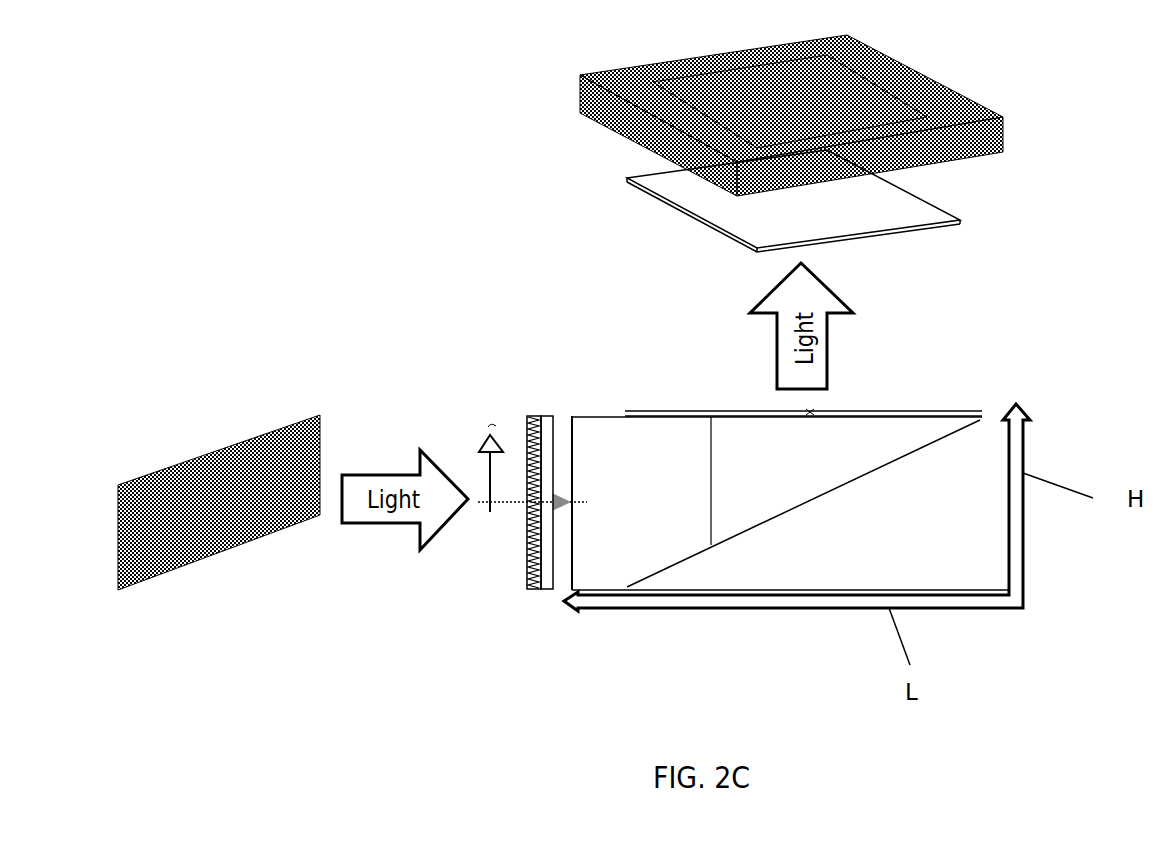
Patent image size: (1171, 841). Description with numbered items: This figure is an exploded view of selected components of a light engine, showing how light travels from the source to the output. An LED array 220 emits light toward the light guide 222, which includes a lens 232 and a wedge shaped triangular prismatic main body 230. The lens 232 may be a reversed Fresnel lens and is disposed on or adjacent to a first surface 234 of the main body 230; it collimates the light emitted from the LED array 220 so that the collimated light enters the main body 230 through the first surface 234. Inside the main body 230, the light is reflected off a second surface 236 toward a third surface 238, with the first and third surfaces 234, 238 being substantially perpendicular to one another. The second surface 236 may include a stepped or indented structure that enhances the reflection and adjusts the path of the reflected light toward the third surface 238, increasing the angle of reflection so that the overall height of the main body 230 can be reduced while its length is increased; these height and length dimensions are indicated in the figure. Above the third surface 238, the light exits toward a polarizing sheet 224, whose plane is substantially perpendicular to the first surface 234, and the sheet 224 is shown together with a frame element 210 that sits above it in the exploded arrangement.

The frame 210 is at (595, 87).
The polarizing sheet 224 is at (817, 124).
The light guide 222 is at (547, 350).
The LED array 220 is at (186, 553).
The main body 230 is at (773, 464).
The lens 232 is at (547, 589).
The first surface 234 is at (575, 537).
The second surface 236 is at (795, 495).
The third surface 238 is at (847, 409).